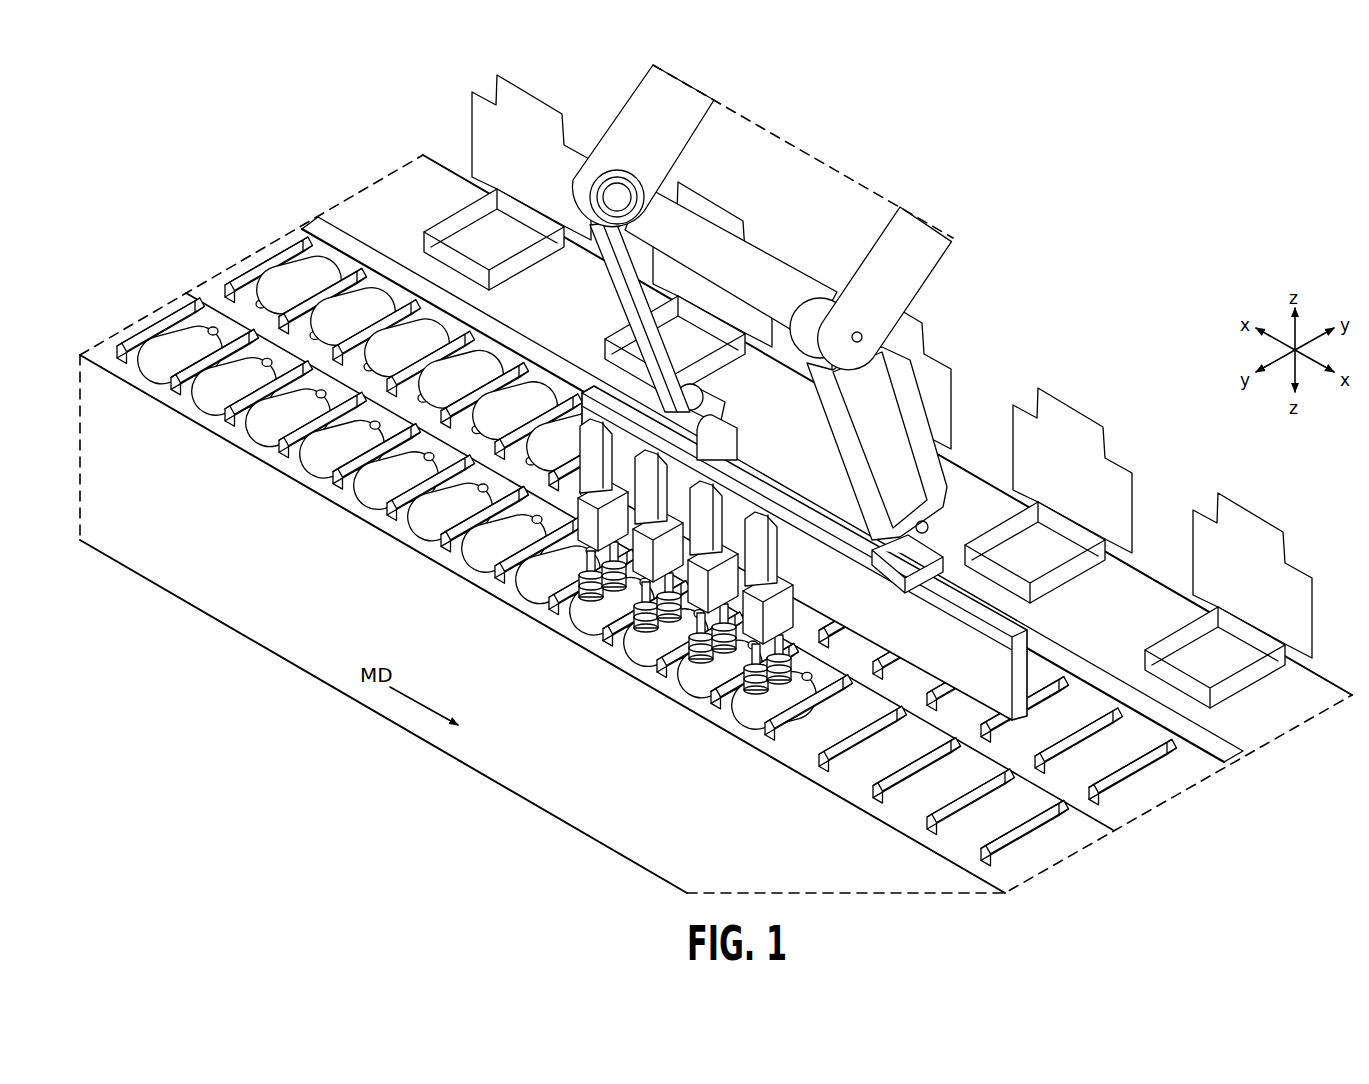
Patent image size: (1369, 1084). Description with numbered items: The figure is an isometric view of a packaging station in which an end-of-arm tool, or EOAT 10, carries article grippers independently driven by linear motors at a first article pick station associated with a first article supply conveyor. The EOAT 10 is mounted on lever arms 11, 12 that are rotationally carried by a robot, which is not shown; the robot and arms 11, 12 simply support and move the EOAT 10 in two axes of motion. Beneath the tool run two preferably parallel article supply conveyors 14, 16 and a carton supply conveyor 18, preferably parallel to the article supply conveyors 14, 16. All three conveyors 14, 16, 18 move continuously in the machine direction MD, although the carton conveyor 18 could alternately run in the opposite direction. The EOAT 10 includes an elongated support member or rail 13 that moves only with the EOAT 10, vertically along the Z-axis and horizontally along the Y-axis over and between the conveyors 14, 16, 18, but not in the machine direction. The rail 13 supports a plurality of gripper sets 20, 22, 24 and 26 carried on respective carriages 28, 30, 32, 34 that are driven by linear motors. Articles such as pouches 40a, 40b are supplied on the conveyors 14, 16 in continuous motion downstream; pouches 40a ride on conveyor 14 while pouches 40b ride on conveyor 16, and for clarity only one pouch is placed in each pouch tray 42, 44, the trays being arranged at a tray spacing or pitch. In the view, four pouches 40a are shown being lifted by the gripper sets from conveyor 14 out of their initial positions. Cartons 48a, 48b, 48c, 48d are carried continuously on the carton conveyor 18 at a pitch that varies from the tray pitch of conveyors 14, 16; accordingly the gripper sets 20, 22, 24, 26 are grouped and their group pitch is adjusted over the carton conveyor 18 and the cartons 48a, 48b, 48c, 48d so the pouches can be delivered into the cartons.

The end-of-arm tool (EOAT) 10 is at (959, 477).
The lever arm 11 is at (600, 282).
The lever arm 12 is at (644, 78).
The elongated support member or rail 13 is at (1030, 652).
The first article supply conveyor 14 is at (84, 350).
The second article supply conveyor 16 is at (205, 280).
The carton supply conveyor 18 is at (368, 188).
The gripper set 20 is at (742, 703).
The gripper set 22 is at (685, 672).
The gripper set 24 is at (632, 520).
The gripper set 26 is at (584, 491).
The carriage 28 is at (790, 562).
The carriage 30 is at (733, 527).
The carriage 32 is at (590, 425).
The carriage 34 is at (582, 440).
The pouch 40a is at (140, 377).
The pouch 40b is at (287, 263).
The pouch tray 42 is at (367, 456).
The pouch tray 44 is at (694, 513).
The carton 48a is at (1122, 462).
The carton 48b is at (937, 361).
The carton 48c is at (733, 205).
The carton 48d is at (527, 88).